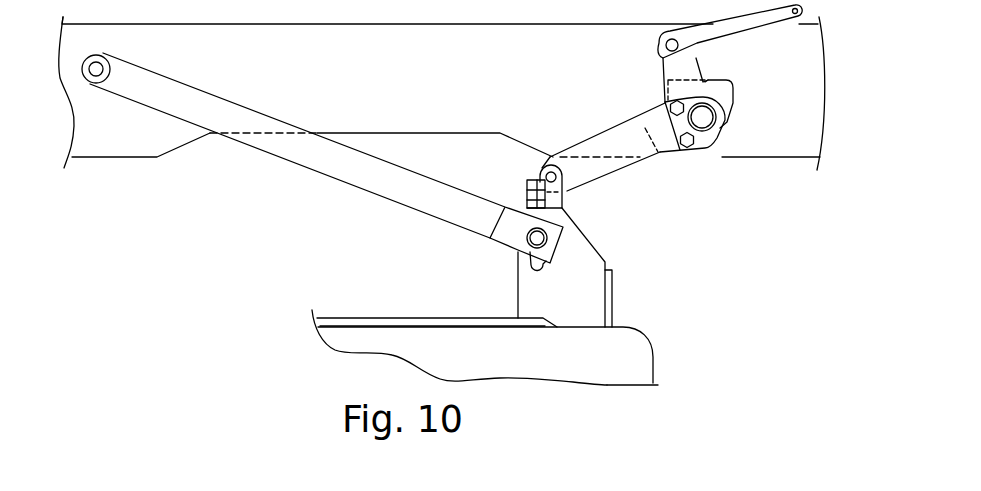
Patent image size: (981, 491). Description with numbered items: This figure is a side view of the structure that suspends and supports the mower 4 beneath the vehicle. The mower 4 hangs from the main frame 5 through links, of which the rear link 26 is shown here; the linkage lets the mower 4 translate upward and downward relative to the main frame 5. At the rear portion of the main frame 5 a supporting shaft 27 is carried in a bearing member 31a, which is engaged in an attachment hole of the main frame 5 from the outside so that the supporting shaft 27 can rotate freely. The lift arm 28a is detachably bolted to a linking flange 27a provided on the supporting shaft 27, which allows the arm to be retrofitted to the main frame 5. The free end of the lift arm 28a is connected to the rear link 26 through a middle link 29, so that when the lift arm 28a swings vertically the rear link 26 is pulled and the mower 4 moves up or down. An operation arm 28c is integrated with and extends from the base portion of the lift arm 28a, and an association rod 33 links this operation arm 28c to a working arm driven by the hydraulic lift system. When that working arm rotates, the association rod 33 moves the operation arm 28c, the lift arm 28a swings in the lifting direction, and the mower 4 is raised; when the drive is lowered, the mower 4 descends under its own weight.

The mower 4 is at (650, 338).
The main frame 5 is at (118, 157).
The rear link 26 is at (322, 172).
The supporting shaft 27 is at (708, 120).
The linking flange 27a is at (703, 142).
The lift arm 28a is at (608, 137).
The operation arm 28c is at (663, 67).
The middle link 29 is at (563, 202).
The bearing member 31a is at (733, 95).
The association rod 33 is at (735, 30).